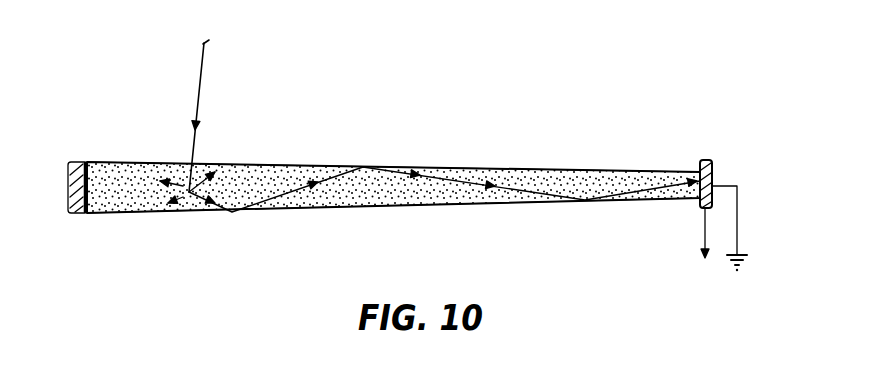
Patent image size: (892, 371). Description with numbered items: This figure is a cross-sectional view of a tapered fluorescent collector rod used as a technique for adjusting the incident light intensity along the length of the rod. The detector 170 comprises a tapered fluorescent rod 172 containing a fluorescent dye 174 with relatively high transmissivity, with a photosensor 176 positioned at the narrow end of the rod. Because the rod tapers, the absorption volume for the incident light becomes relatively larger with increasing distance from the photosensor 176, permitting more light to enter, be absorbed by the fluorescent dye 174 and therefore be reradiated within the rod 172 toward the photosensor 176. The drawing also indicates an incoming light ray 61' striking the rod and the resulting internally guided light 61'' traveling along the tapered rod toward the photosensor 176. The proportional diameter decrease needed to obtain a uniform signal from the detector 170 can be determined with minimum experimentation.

The incident light beam 61' is at (205, 121).
The internally reflected light beam 61'' is at (444, 202).
The detector 170 is at (458, 140).
The tapered fluorescent rod 172 is at (310, 163).
The fluorescent dye 174 is at (606, 170).
The photosensor 176 is at (708, 160).